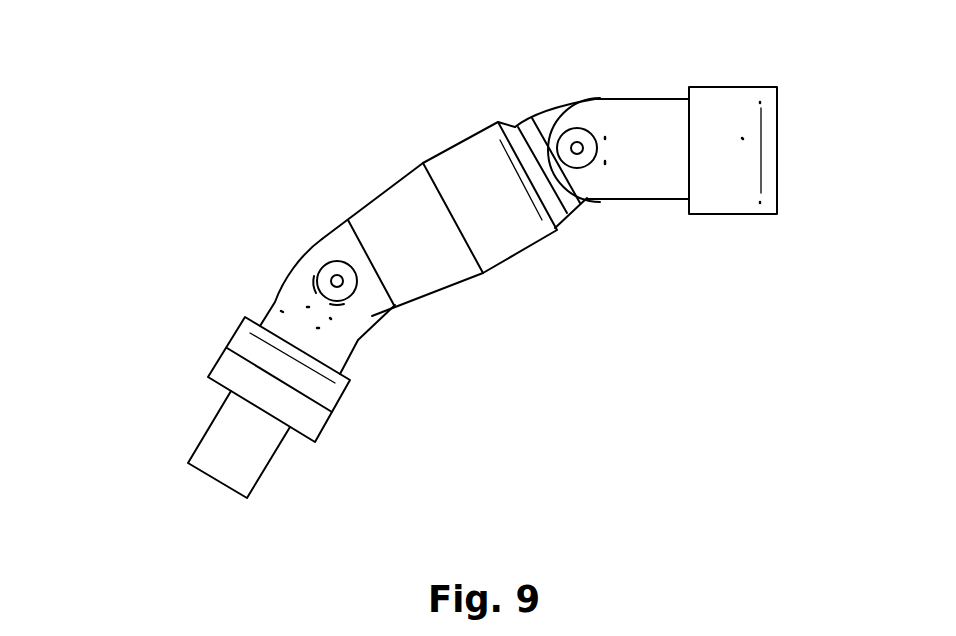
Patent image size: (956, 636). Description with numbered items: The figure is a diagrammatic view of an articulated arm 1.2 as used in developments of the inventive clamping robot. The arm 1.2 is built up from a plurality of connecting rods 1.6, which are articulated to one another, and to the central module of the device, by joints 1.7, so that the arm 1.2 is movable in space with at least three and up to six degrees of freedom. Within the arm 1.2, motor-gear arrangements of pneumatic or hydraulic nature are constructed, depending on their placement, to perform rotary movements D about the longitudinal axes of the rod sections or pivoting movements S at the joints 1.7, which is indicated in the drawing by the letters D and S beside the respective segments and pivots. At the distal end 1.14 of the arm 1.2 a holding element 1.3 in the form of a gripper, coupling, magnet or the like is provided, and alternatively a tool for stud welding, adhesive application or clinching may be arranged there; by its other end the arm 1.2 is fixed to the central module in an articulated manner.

The arm 1.2 is at (284, 206).
The holding element 1.3 is at (201, 441).
The connecting rod 1.6 is at (396, 190).
The joint 1.7 is at (578, 147).
The distal end 1.14 is at (332, 483).
The rotary movement D is at (278, 355).
The pivoting movement S is at (360, 300).